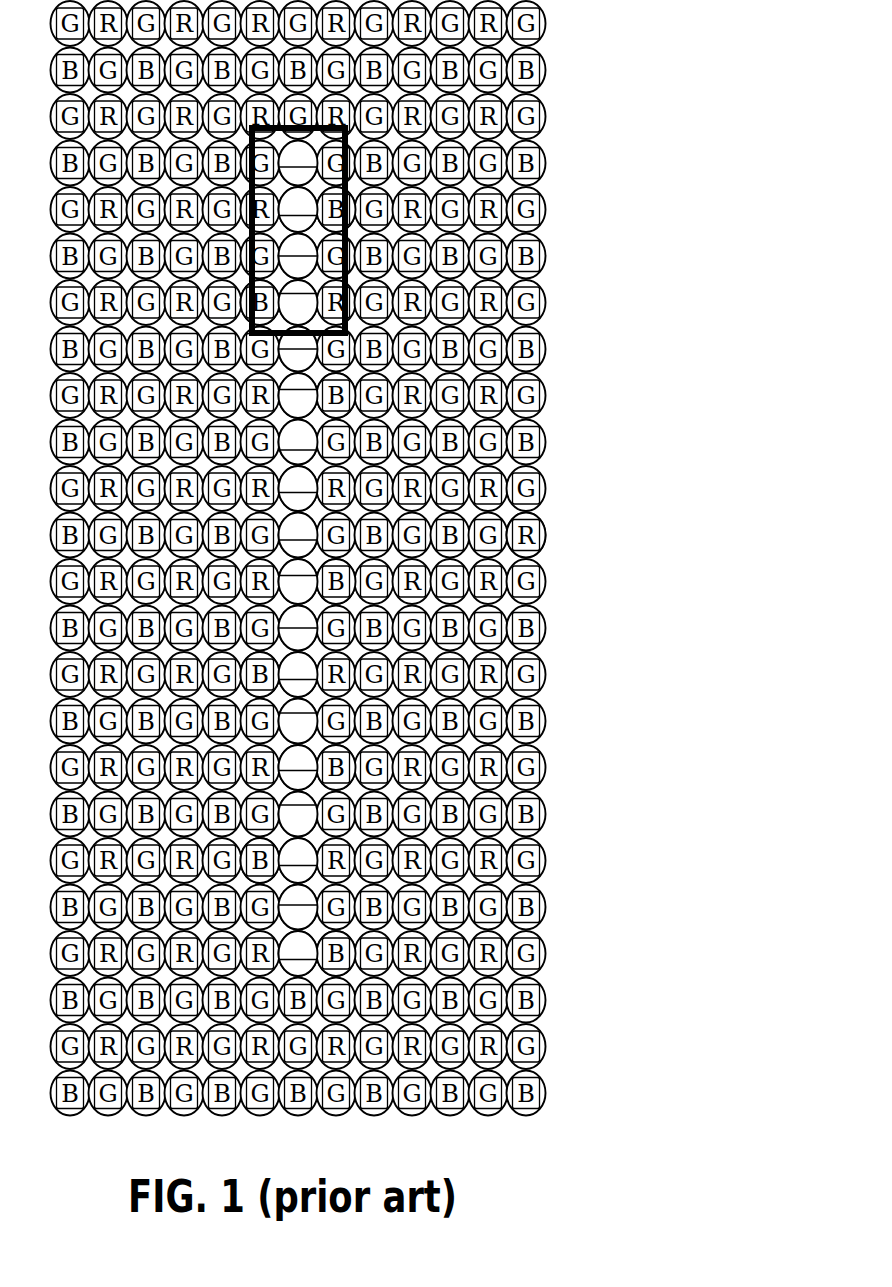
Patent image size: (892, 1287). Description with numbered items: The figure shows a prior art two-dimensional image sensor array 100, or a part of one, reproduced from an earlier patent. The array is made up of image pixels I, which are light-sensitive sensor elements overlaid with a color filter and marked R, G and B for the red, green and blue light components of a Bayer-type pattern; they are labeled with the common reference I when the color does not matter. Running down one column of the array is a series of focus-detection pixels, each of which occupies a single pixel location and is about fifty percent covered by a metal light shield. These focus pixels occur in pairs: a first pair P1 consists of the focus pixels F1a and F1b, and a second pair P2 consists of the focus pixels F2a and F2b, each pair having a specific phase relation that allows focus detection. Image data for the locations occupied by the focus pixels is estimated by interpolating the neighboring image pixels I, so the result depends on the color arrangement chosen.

The two-dimensional image sensor array 100 is at (423, 608).
The focus-detection pixel pair P1 is at (680, 22).
The focus-detection pixel pair P2 is at (680, 155).
The focus-detection pixel F1a is at (296, 177).
The focus-detection pixel F1b is at (292, 225).
The focus-detection pixel F2a is at (292, 262).
The focus-detection pixel F2b is at (283, 292).
The image pixel I is at (460, 667).